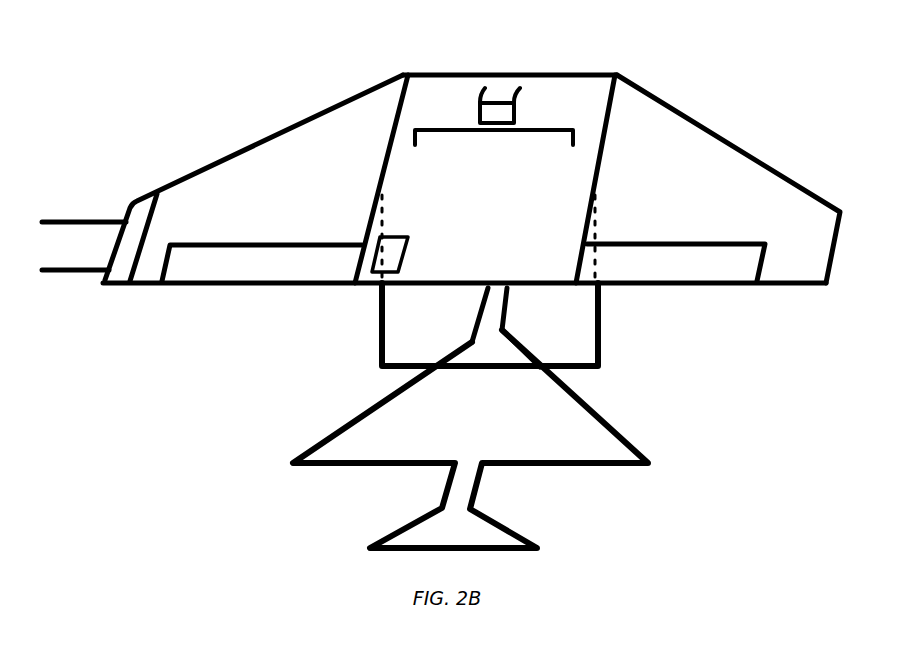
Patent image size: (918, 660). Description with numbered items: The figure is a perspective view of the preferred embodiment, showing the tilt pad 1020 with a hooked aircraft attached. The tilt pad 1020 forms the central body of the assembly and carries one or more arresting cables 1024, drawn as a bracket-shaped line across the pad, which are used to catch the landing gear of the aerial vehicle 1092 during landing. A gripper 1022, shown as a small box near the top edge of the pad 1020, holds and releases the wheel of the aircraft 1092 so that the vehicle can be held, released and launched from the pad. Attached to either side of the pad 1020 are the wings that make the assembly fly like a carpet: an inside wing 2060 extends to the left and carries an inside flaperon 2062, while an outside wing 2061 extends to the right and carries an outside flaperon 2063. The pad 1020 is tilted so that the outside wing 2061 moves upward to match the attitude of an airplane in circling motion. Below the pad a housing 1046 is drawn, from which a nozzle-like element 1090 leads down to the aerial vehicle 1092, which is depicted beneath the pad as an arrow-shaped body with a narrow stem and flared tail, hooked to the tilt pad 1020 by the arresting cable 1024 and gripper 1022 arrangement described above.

The tilt pad 1020 is at (446, 95).
The gripper 1022 is at (478, 101).
The arresting cable 1024 is at (553, 123).
The lower housing 1046 is at (585, 368).
The nozzle 1090 is at (472, 342).
The aerial vehicle 1092 is at (547, 443).
The inside wing 2060 is at (255, 175).
The outside wing 2061 is at (735, 188).
The inside flaperon 2062 is at (255, 267).
The outside flaperon 2063 is at (705, 267).